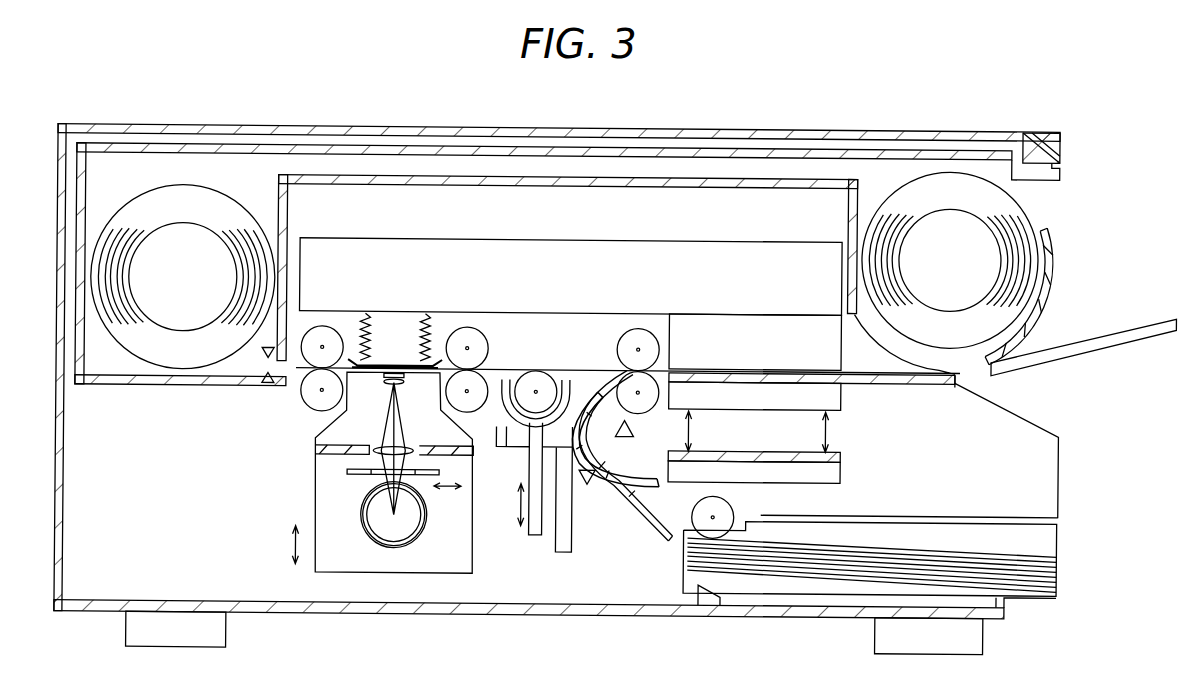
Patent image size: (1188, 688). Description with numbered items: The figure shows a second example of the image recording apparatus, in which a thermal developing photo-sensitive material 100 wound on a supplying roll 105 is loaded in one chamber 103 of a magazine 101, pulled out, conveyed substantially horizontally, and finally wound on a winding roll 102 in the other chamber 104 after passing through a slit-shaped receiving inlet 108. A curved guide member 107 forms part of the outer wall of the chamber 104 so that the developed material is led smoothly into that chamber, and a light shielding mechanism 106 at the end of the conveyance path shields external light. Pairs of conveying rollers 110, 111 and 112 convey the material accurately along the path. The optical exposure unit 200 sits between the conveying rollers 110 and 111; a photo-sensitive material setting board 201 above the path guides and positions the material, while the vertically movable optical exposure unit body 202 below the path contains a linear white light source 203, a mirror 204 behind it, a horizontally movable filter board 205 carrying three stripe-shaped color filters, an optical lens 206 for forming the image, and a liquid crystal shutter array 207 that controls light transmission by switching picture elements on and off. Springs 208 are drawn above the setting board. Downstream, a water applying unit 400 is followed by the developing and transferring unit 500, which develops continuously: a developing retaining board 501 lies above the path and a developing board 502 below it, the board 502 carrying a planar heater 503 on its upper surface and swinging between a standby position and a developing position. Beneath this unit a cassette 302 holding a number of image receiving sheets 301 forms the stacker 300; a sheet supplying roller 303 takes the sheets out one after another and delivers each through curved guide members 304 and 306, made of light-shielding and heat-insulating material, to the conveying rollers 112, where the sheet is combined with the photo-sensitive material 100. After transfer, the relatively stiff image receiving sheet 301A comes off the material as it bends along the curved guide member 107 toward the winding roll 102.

The thermal developing photo-sensitive material 100 is at (240, 198).
The magazine 101 is at (528, 146).
The winding roll 102 is at (960, 228).
The chamber 103 is at (118, 166).
The chamber 104 is at (870, 170).
The supplying roll 105 is at (183, 240).
The light shielding mechanism 106 is at (898, 384).
The curved guide member 107 is at (1060, 272).
The photo-sensitive material receiving inlet 108 is at (1030, 196).
The conveying rollers 110 is at (310, 402).
The conveying rollers 111 is at (487, 347).
The conveying rollers 112 is at (617, 346).
The optical exposure unit 200 is at (455, 575).
The photo-sensitive material setting board 201 is at (397, 364).
The optical exposure unit body 202 is at (473, 530).
The linear white light source 203 is at (386, 543).
The mirror 204 is at (422, 526).
The filter board 205 is at (355, 477).
The optical lens 206 is at (408, 450).
The liquid crystal shutter array 207 is at (398, 386).
The springs 208 is at (430, 328).
The stacker 300 is at (978, 478).
The image receiving sheets 301 is at (937, 550).
The image receiving sheet 301A is at (1068, 348).
The cassette 302 is at (1059, 550).
The sheet supplying roller 303 is at (700, 508).
The curved guide member 304 is at (612, 480).
The curved guide 306 is at (644, 466).
The water applying unit 400 is at (550, 535).
The developing and transferring unit 500 is at (775, 306).
The developing retaining board 501 is at (712, 325).
The developing board 502 is at (768, 481).
The planar heater 503 is at (740, 452).